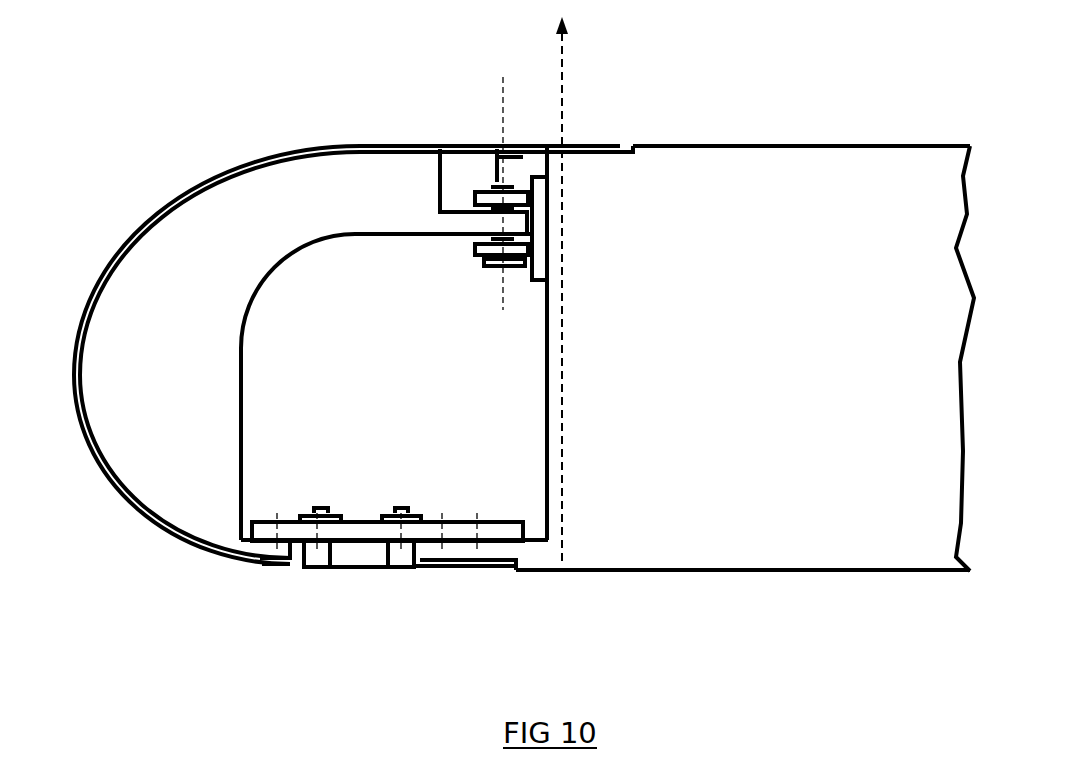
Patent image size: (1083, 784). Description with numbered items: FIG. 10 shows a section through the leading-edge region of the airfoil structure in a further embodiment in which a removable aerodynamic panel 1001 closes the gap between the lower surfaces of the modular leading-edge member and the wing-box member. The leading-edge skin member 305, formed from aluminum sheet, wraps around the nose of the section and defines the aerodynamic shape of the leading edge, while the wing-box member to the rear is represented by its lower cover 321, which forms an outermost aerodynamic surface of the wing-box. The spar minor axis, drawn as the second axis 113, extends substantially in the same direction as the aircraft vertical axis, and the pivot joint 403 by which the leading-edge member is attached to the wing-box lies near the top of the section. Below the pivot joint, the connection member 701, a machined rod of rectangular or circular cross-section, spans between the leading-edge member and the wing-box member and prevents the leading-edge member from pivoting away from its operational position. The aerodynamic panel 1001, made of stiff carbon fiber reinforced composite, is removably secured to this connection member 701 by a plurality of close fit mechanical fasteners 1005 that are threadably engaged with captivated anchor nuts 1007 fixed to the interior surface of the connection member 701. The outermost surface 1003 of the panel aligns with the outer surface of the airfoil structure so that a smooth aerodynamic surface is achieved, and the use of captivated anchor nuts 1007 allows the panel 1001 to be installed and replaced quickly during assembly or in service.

The second axis 113 is at (562, 128).
The leading-edge skin member 305 is at (125, 540).
The lower cover 321 is at (661, 569).
The pivot joint 403 is at (502, 128).
The connection member 701 is at (470, 520).
The aerodynamic panel 1001 is at (363, 550).
The outermost surface 1003 is at (245, 567).
The mechanical fasteners 1005 is at (317, 548).
The captivated anchor nuts 1007 is at (405, 503).